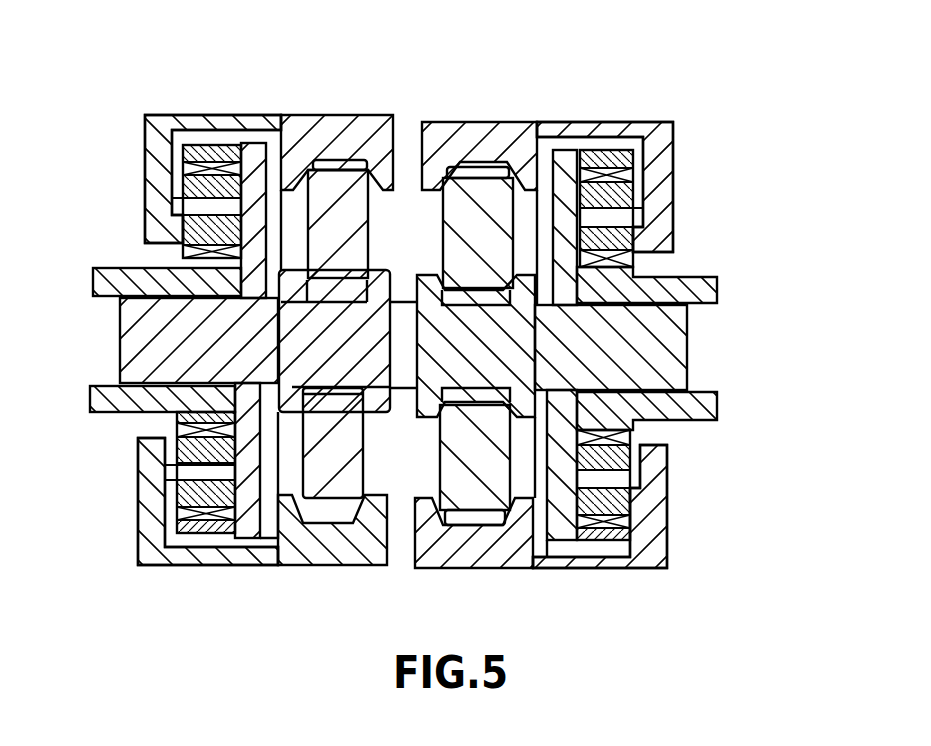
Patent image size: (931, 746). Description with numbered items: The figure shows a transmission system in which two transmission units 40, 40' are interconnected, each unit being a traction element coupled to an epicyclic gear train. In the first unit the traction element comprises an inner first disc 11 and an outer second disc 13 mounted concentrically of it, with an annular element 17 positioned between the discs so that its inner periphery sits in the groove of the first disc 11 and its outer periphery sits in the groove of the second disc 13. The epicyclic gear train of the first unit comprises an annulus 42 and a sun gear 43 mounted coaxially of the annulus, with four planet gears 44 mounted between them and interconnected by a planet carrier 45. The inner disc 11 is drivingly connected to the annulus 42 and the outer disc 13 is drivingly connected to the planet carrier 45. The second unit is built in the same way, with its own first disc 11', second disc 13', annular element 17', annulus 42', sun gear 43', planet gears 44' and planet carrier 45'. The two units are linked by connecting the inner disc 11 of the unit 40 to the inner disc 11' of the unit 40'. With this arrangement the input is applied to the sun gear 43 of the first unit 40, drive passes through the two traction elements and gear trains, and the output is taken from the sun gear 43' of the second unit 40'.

The transmission unit 40 is at (167, 290).
The transmission unit 40' is at (660, 298).
The second disc 13 is at (338, 117).
The second disc 13' is at (483, 117).
The planet carrier 45 is at (206, 179).
The planet carrier 45' is at (597, 187).
The planet gears 44 is at (163, 339).
The planet gears 44' is at (667, 345).
The sun gear 43 is at (151, 335).
The sun gear 43' is at (678, 348).
The first disc 11 is at (280, 340).
The first disc 11' is at (512, 353).
The annulus 42 is at (199, 526).
The annulus 42' is at (596, 531).
The annular element 17 is at (323, 556).
The annular element 17' is at (475, 563).